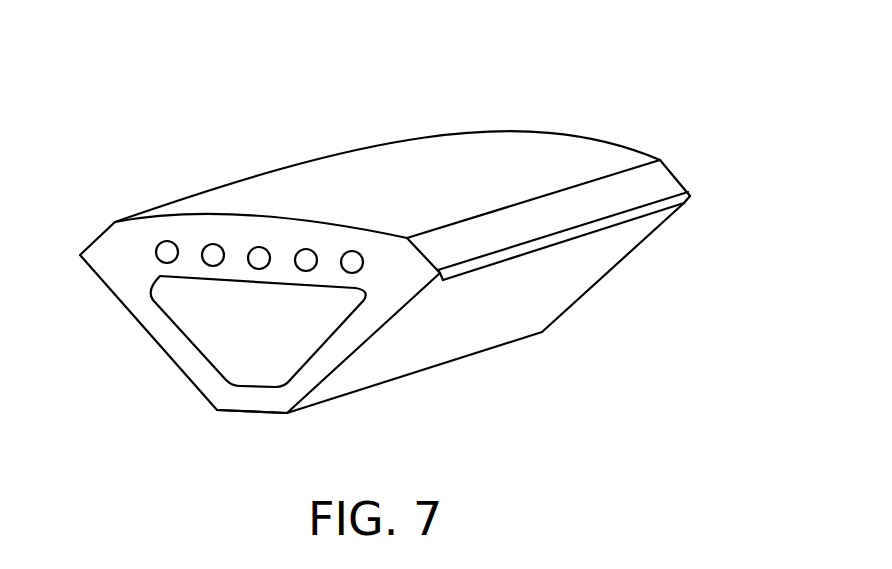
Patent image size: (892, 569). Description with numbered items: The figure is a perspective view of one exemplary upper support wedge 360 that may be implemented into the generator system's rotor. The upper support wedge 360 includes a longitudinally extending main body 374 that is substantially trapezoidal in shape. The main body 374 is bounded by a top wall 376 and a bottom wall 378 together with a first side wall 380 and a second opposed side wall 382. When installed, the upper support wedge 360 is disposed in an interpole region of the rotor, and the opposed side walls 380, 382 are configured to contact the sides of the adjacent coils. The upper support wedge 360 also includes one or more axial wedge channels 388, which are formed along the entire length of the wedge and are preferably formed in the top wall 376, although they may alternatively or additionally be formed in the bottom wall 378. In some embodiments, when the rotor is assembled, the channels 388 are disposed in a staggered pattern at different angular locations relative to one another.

The upper support wedge 360 is at (380, 246).
The main body 374 is at (425, 369).
The top wall 376 is at (453, 152).
The bottom wall 378 is at (247, 400).
The first side wall 380 is at (163, 333).
The second side wall 382 is at (597, 280).
The axial wedge channels 388 is at (343, 249).